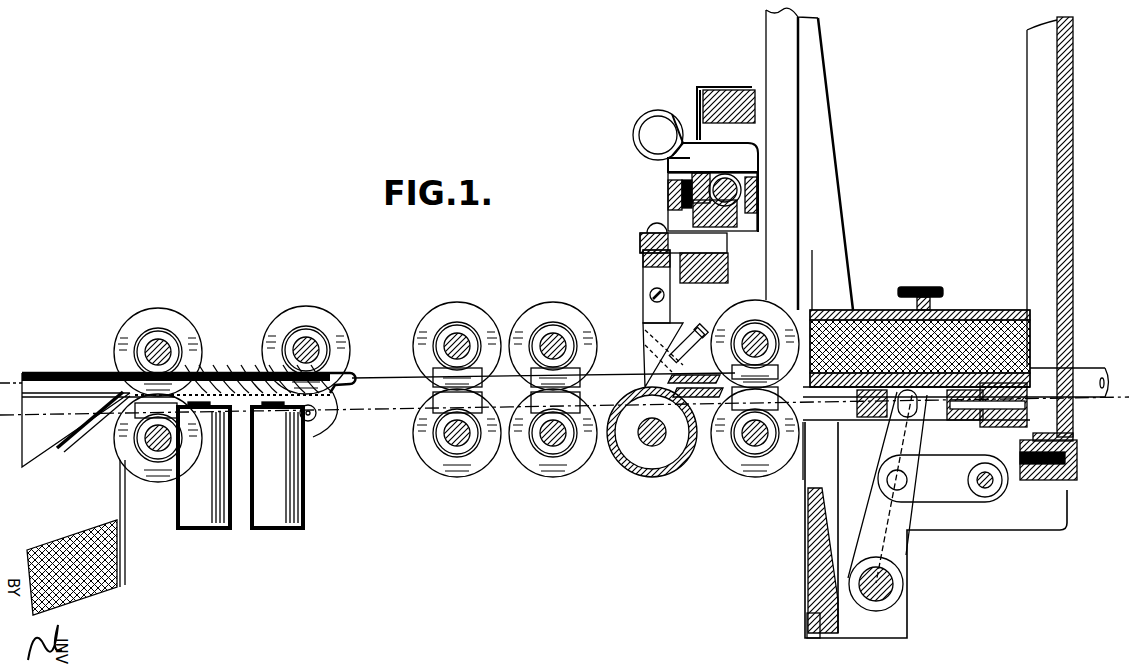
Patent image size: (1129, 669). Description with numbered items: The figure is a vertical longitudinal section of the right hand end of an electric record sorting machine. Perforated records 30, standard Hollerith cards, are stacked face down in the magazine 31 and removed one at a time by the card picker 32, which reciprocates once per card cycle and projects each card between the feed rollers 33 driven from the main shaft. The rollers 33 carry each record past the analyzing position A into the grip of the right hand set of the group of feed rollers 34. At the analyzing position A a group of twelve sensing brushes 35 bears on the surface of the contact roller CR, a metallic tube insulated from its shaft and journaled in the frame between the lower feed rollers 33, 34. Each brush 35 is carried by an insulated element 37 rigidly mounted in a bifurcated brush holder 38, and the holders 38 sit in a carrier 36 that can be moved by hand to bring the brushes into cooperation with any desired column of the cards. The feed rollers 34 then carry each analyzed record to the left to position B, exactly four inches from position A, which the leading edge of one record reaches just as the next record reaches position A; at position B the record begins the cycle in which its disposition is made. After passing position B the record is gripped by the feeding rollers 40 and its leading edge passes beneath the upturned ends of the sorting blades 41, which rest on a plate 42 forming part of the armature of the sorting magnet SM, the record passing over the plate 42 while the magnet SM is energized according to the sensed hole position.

The perforated records 30 is at (980, 340).
The magazine 31 is at (800, 230).
The card picker 32 is at (1050, 407).
The feed rollers 33 is at (747, 307).
The feed rollers 34 is at (522, 320).
The sensing brushes 35 is at (663, 365).
The carrier 36 is at (727, 236).
The element 37 is at (682, 337).
The brush holder 38 is at (652, 278).
The feeding rollers 40 is at (272, 328).
The sorting blades 41 is at (250, 382).
The plate 42 is at (333, 417).
The contact roller CR is at (648, 473).
The sorting magnet SM is at (262, 502).
The analyzing position A is at (647, 380).
The position B is at (377, 393).